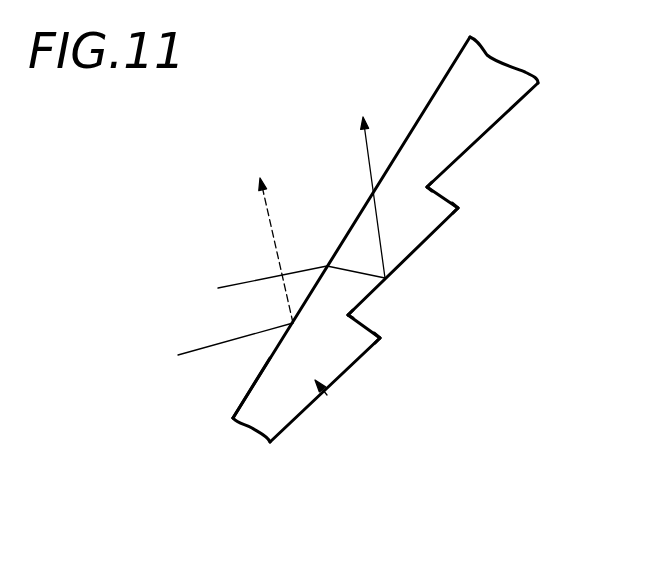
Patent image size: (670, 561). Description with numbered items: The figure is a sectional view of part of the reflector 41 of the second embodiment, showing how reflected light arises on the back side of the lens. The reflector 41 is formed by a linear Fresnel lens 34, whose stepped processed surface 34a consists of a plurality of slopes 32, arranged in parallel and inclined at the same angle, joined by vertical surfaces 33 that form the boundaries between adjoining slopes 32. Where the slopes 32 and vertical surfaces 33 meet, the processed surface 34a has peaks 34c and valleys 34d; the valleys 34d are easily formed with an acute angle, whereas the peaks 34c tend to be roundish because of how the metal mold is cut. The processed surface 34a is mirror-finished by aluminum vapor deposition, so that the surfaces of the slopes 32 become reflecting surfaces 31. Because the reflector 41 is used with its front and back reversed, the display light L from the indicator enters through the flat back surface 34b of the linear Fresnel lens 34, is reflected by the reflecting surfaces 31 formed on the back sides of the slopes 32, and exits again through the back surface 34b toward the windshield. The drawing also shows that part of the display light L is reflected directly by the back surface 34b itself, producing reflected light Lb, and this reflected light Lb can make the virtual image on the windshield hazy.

The reflecting surface 31 is at (483, 120).
The slope 32 is at (503, 120).
The vertical surface 33 is at (446, 198).
The linear Fresnel lens 34 is at (322, 393).
The processed surface 34a is at (293, 422).
The back surface 34b is at (243, 400).
The peak 34c is at (460, 208).
The valley 34d is at (427, 187).
The reflector 41 is at (261, 455).
The display light L is at (238, 283).
The reflected light Lb is at (271, 230).